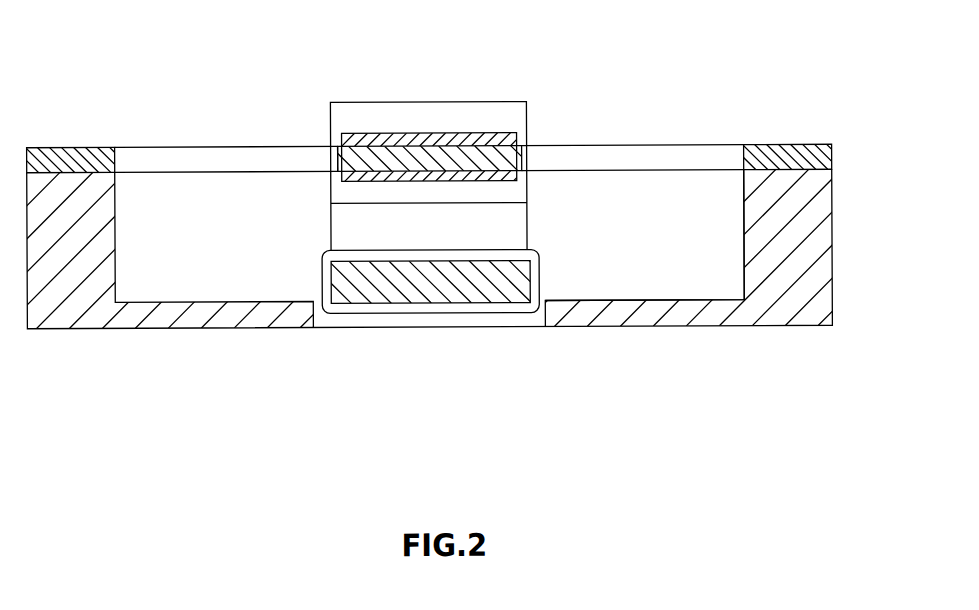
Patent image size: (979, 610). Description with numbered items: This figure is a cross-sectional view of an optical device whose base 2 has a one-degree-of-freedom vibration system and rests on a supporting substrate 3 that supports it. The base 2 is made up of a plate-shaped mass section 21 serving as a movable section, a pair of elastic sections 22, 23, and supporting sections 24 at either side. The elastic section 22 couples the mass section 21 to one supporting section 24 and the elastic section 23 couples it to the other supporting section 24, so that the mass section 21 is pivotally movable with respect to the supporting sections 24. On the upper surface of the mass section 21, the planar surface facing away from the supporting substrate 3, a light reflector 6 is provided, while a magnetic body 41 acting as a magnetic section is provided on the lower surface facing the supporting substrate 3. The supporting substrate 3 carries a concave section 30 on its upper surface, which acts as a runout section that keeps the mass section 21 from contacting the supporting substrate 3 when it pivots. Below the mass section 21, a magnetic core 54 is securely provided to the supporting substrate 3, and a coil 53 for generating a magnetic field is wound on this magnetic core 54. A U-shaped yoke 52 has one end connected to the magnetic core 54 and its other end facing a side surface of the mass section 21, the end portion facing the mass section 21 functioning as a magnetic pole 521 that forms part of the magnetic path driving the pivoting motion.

The base 2 is at (452, 117).
The supporting substrate 3 is at (487, 283).
The light reflector 6 is at (383, 142).
The mass section 21 is at (417, 157).
The elastic section 22 is at (188, 158).
The elastic section 23 is at (633, 157).
The supporting section 24 is at (73, 162).
The concave section 30 is at (676, 275).
The magnetic body 41 is at (355, 166).
The yoke 52 is at (434, 141).
The magnetic pole 521 is at (502, 118).
The coil 53 is at (430, 323).
The magnetic core 54 is at (463, 283).